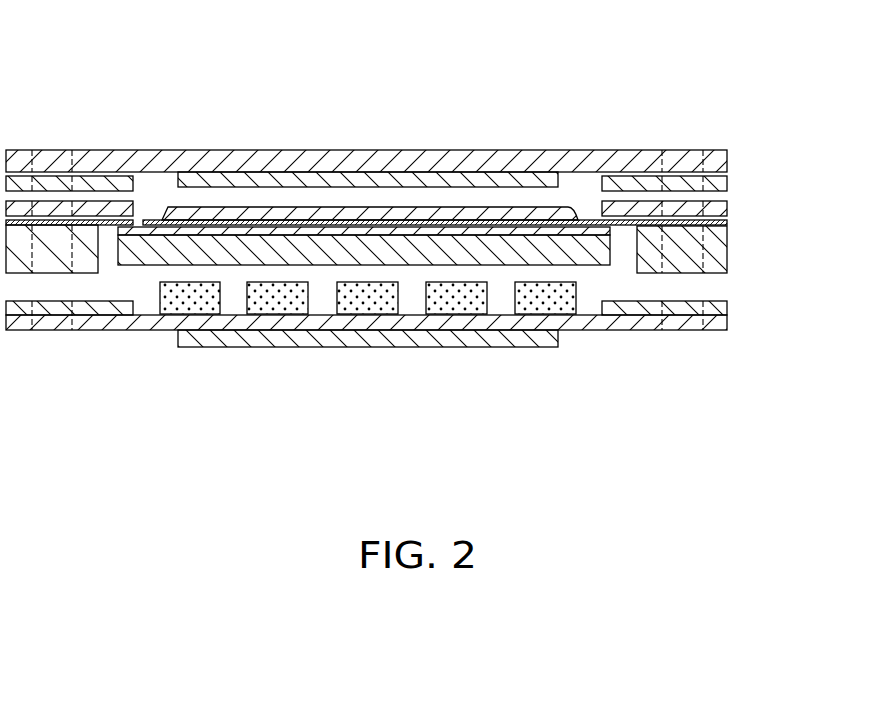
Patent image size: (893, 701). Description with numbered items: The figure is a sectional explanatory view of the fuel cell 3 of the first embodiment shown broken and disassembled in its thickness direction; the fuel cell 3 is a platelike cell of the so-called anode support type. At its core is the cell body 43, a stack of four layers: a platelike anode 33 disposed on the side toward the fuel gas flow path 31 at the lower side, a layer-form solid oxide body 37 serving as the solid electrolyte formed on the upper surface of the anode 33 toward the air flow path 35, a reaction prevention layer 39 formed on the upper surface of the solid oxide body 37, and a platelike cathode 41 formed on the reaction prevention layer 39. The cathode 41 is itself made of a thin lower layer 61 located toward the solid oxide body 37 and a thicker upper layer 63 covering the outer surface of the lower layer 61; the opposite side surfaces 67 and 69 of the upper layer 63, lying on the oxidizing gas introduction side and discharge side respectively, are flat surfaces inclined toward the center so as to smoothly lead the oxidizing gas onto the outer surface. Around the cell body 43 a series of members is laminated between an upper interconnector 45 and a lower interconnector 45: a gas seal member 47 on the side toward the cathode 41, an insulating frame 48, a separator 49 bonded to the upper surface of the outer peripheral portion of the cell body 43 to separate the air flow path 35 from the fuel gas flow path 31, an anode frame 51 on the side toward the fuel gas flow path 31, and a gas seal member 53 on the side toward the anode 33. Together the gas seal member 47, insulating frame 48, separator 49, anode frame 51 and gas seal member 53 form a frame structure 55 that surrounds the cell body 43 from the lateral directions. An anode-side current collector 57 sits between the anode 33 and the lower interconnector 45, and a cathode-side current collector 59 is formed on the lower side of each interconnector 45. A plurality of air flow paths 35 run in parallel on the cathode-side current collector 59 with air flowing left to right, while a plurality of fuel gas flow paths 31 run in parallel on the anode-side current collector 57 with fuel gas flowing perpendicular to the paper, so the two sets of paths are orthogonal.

The fuel cell 3 is at (696, 93).
The fuel gas flow path 31 is at (319, 300).
The anode 33 is at (262, 250).
The air flow path 35 is at (366, 180).
The solid oxide body 37 is at (250, 235).
The reaction prevention layer 39 is at (236, 232).
The cathode 41 is at (250, 12).
The cell body 43 is at (292, 30).
The interconnector 45 is at (440, 163).
The gas seal member 47 is at (727, 160).
The insulating frame 48 is at (727, 183).
The separator 49 is at (727, 211).
The anode frame 51 is at (727, 248).
The gas seal member 53 is at (727, 304).
The frame structure 55 is at (768, 155).
The anode-side current collector 57 is at (562, 303).
The cathode-side current collector 59 is at (508, 176).
The lower layer 61 is at (212, 216).
The upper layer 63 is at (180, 209).
The side surface 67 is at (575, 205).
The side surface 69 is at (163, 209).